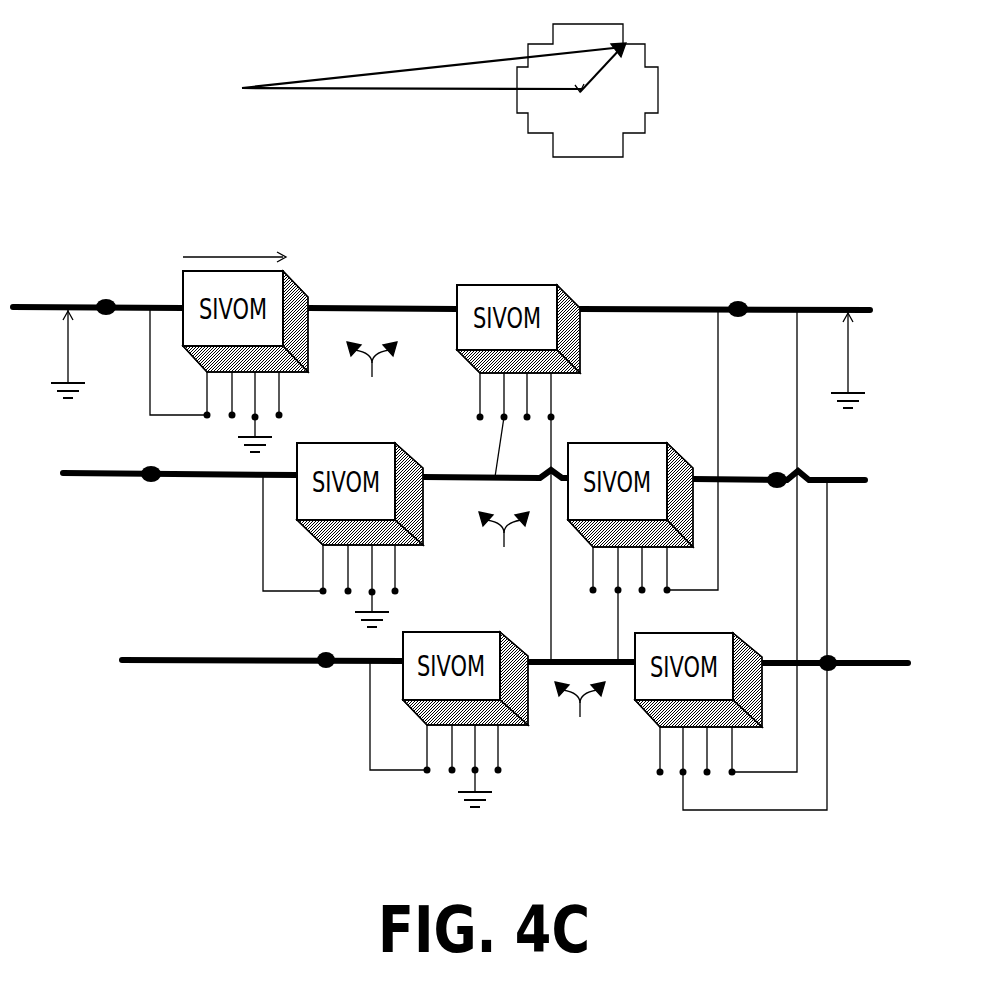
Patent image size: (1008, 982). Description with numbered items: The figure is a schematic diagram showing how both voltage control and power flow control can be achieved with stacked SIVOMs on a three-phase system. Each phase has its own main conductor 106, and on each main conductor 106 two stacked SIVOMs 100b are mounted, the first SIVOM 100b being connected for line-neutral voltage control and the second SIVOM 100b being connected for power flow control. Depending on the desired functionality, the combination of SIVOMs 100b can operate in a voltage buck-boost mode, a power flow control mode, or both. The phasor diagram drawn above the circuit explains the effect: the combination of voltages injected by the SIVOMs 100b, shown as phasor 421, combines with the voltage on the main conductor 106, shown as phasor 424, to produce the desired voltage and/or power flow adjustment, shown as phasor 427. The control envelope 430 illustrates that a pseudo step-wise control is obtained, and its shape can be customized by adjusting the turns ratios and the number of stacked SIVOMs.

The main conductor 106 is at (137, 305).
The SIVOM 100b is at (476, 545).
The phasor of combined injected voltages 421 is at (620, 57).
The phasor of main conductor voltage 424 is at (408, 88).
The phasor of adjusted voltage 427 is at (473, 63).
The control envelope 430 is at (660, 88).